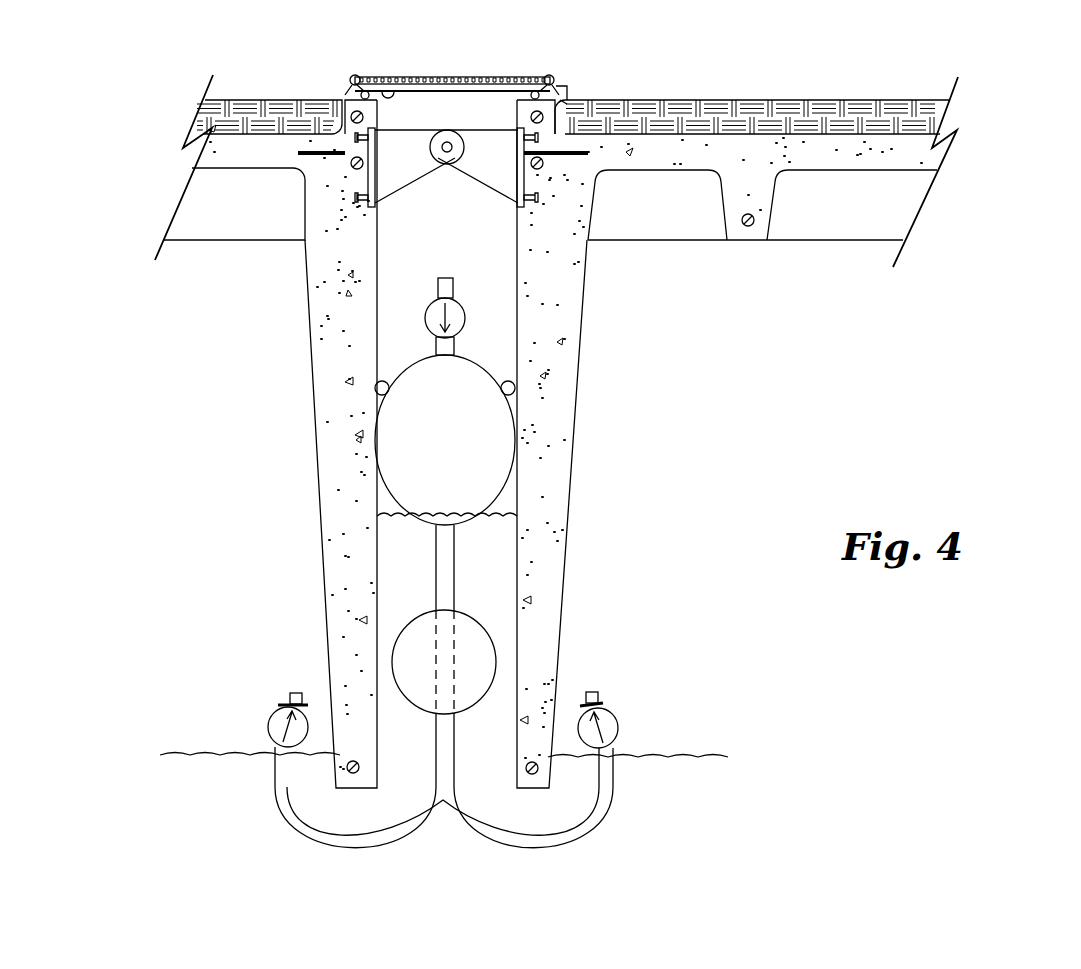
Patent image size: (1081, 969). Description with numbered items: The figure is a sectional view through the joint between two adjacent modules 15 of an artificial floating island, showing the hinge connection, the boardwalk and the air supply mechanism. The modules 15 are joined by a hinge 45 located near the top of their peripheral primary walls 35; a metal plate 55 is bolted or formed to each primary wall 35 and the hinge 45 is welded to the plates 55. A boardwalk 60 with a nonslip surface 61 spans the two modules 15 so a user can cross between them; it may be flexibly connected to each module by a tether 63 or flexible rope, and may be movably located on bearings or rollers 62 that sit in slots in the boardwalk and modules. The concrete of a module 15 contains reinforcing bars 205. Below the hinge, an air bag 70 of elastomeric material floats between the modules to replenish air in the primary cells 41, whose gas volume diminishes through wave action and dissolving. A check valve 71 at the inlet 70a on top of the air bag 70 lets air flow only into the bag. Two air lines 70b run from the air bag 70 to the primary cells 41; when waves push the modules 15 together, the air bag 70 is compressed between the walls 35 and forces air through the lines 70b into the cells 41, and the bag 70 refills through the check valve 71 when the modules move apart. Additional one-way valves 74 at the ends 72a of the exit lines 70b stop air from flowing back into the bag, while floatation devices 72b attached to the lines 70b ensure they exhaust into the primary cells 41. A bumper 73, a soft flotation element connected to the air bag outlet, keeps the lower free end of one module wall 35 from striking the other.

The module 15 is at (175, 212).
The primary wall 35 is at (516, 276).
The primary cell 41 is at (216, 455).
The hinge 45 is at (449, 172).
The metal plate 55 is at (379, 166).
The boardwalk 60 is at (389, 90).
The nonslip surface 61 is at (464, 68).
The rollers 62 is at (567, 93).
The tether 63 is at (348, 83).
The air bag 70 is at (462, 460).
The inlet 70a is at (441, 280).
The air line 70b is at (470, 842).
The check valve 71 is at (425, 318).
The end of exit line 72a is at (293, 692).
The floatation device 72b is at (278, 701).
The bumper 73 is at (428, 675).
The one-way valve 74 is at (268, 727).
The reinforcing bar 205 is at (752, 226).